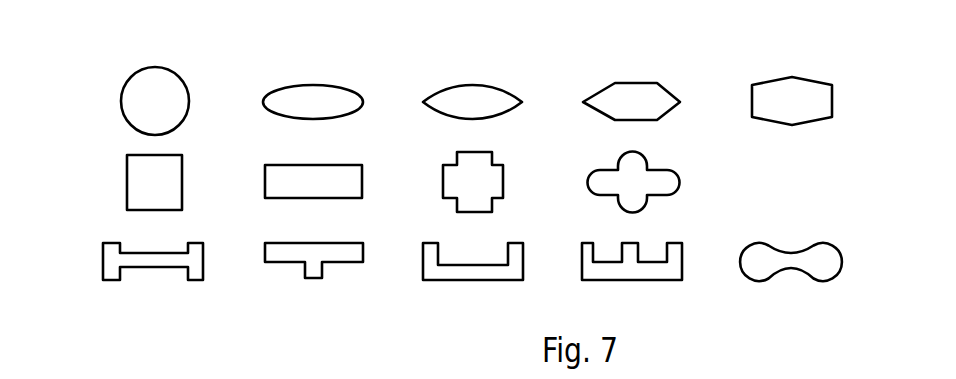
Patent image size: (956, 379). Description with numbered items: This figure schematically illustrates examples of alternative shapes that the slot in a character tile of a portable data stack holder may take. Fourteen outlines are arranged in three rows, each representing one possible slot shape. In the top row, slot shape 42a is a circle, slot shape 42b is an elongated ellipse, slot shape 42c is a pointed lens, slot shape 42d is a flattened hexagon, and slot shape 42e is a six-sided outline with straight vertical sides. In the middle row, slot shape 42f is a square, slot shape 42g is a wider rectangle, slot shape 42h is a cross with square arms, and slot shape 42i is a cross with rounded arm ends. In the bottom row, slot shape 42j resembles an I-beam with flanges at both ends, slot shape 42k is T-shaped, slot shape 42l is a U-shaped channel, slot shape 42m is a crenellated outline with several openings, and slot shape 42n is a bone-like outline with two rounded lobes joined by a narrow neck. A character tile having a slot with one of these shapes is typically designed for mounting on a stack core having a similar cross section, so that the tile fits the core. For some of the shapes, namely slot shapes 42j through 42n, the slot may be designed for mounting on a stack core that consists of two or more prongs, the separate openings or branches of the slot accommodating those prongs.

The slot shape 42a is at (140, 73).
The slot shape 42b is at (302, 88).
The slot shape 42c is at (453, 85).
The slot shape 42d is at (617, 85).
The slot shape 42e is at (762, 83).
The slot shape 42f is at (130, 177).
The slot shape 42g is at (273, 165).
The slot shape 42h is at (445, 180).
The slot shape 42i is at (603, 170).
The slot shape 42j is at (105, 255).
The slot shape 42k is at (298, 253).
The slot shape 42l is at (435, 277).
The slot shape 42m is at (680, 243).
The slot shape 42n is at (795, 252).